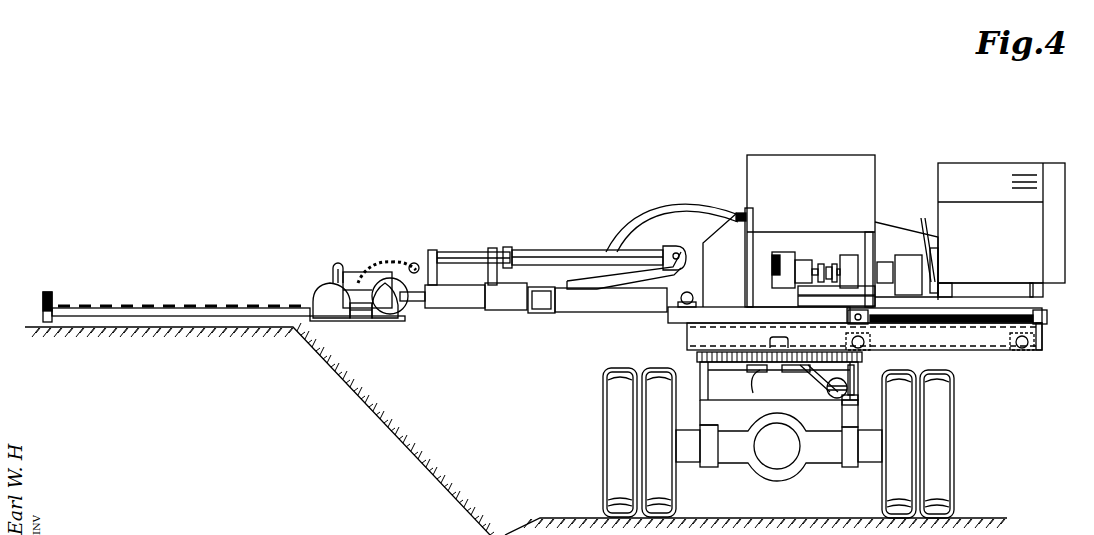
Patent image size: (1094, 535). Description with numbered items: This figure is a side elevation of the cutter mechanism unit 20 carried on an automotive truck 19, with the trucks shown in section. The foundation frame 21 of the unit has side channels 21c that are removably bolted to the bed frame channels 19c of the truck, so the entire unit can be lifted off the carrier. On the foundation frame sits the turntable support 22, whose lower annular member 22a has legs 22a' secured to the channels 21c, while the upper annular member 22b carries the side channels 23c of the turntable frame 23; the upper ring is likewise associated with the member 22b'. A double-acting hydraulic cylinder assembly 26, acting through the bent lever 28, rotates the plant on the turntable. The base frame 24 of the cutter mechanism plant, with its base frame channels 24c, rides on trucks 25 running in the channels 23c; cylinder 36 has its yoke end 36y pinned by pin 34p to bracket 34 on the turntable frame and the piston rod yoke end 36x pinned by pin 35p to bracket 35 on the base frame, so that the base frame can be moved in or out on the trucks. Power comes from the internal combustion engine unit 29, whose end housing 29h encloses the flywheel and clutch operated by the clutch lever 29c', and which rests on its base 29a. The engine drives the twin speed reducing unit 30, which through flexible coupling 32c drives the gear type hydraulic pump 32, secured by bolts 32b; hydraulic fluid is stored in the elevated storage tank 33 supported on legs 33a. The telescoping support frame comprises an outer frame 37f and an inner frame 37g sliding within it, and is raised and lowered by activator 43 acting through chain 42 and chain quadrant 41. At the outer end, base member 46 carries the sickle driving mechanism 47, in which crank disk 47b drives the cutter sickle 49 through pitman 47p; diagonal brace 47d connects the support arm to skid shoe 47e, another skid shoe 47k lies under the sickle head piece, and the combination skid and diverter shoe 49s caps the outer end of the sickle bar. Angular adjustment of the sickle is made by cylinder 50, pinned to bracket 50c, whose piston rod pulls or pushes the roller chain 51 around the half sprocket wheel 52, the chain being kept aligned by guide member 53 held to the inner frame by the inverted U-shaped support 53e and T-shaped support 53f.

The automotive truck 19 is at (770, 472).
The bed frame channels 19c is at (697, 440).
The cutter mechanism unit 20 is at (700, 178).
The foundation frame 21 is at (695, 385).
The side channels 21c is at (862, 408).
The turntable support 22 is at (690, 357).
The lower annular member 22a is at (952, 386).
The legs 22a' is at (951, 410).
The upper annular member 22b is at (871, 360).
The mounting plate 22b' is at (744, 394).
The turntable frame 23 is at (680, 336).
The side channels 23c is at (1038, 350).
The base frame 24 is at (660, 322).
The base frame channels 24c is at (759, 315).
The trucks 25 is at (867, 340).
The double-acting hydraulic cylinder assembly 26 is at (840, 398).
The bent lever 28 is at (812, 378).
The internal combustion engine unit 29 is at (1001, 223).
The engine base 29a is at (978, 290).
The clutch lever 29c' is at (913, 240).
The end housing 29h is at (940, 254).
The twin speed reducing unit 30 is at (852, 255).
The gear type hydraulic pump 32 is at (779, 252).
The bolts 32b is at (772, 266).
The flexible coupling 32c is at (826, 262).
The storage tank 33 is at (811, 231).
The legs 33a is at (768, 289).
The bracket 34 is at (1043, 330).
The pin 34p is at (1040, 322).
The bracket 35 is at (845, 316).
The pin 35p is at (798, 299).
The cylinder 36 is at (968, 350).
The yoke end of piston rod 36x is at (803, 341).
The yoke end of cylinder 36y is at (1042, 312).
The outer frame 37f is at (566, 314).
The inner frame 37g is at (468, 312).
The chain quadrant 41 is at (663, 210).
The chain 42 is at (741, 226).
The activator 43 is at (906, 261).
The base member 46 is at (416, 321).
The sickle driving mechanism 47 is at (330, 256).
The crank disk 47b is at (405, 322).
The diagonal brace 47d is at (351, 272).
The skid shoe 47e is at (385, 321).
The skid shoe 47k is at (322, 288).
The pitman 47p is at (358, 319).
The cutter sickle 49 is at (206, 300).
The combination skid and diverter shoe 49s is at (44, 292).
The cylinder 50 is at (569, 250).
The bracket 50c is at (620, 250).
The roller chain 51 is at (406, 258).
The half sprocket wheel 52 is at (383, 266).
The guide member 53 is at (485, 244).
The inverted U-shaped support 53e is at (434, 248).
The T-shaped support 53f is at (499, 250).